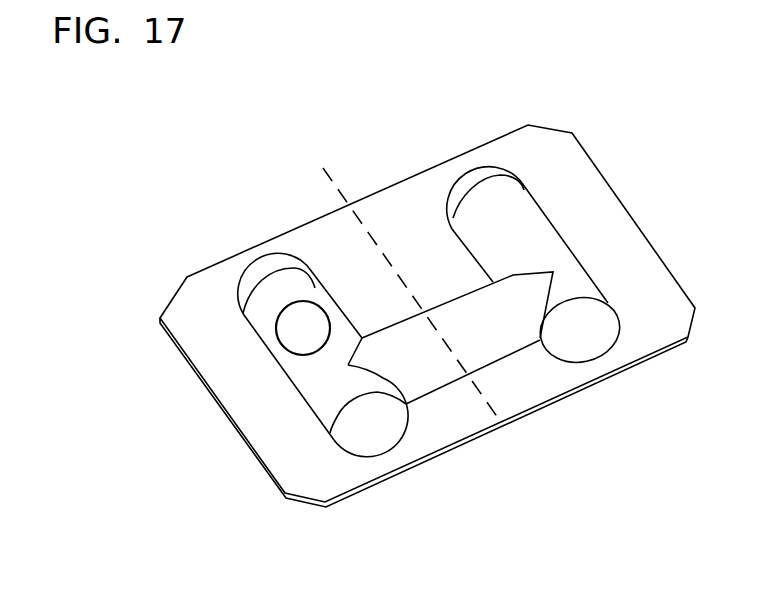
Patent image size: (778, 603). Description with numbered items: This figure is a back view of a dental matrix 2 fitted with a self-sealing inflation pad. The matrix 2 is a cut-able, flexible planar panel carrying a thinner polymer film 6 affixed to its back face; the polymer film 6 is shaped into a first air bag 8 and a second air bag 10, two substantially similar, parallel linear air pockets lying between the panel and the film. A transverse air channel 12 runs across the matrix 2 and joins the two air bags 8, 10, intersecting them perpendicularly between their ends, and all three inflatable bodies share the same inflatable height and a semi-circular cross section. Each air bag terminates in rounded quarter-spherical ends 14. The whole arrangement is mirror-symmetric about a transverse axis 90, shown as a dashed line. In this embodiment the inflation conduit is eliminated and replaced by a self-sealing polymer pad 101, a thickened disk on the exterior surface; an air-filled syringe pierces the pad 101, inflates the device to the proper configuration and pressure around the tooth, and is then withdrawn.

The matrix 2 is at (84, 307).
The polymer film 6 is at (408, 203).
The first air bag 8 is at (510, 197).
The second air bag 10 is at (276, 303).
The air channel 12 is at (477, 355).
The spherical ends 14 is at (377, 432).
The transverse axis 90 is at (324, 180).
The self-sealing polymer pad 101 is at (297, 335).